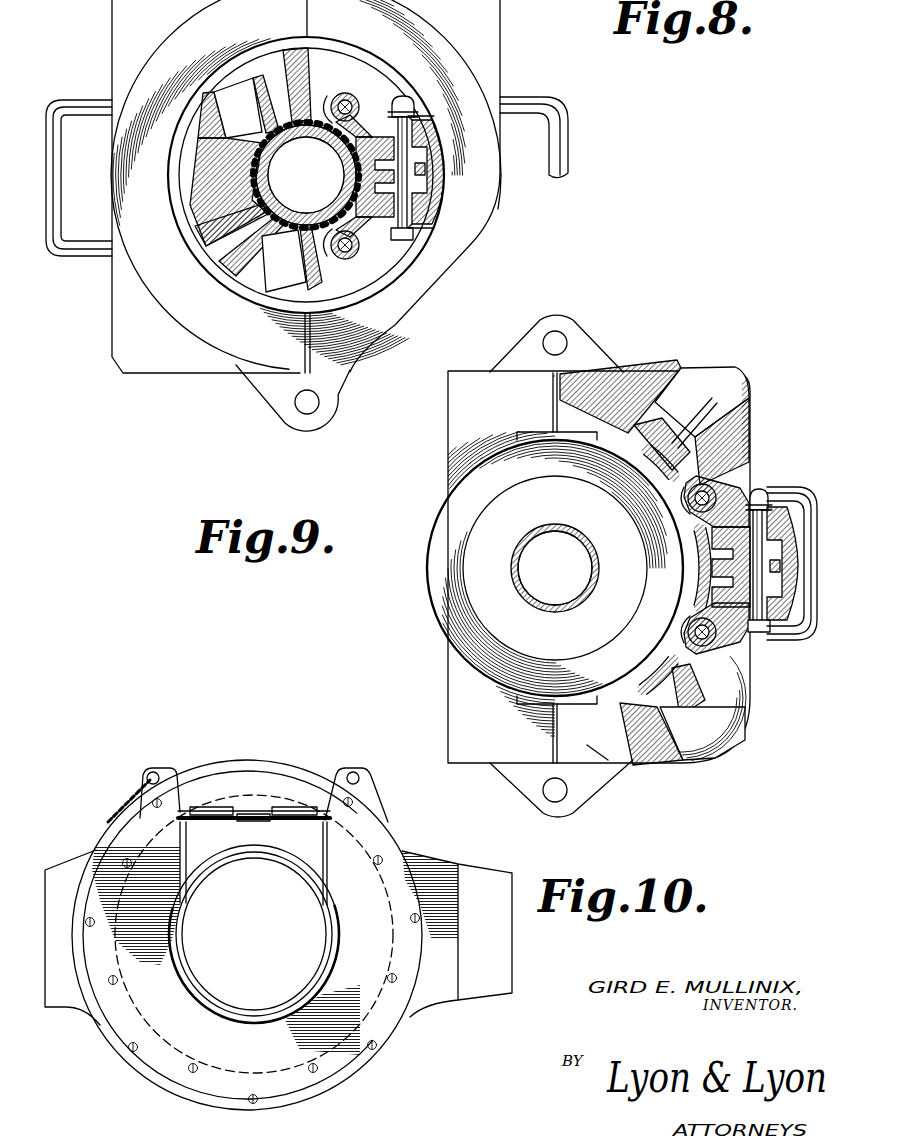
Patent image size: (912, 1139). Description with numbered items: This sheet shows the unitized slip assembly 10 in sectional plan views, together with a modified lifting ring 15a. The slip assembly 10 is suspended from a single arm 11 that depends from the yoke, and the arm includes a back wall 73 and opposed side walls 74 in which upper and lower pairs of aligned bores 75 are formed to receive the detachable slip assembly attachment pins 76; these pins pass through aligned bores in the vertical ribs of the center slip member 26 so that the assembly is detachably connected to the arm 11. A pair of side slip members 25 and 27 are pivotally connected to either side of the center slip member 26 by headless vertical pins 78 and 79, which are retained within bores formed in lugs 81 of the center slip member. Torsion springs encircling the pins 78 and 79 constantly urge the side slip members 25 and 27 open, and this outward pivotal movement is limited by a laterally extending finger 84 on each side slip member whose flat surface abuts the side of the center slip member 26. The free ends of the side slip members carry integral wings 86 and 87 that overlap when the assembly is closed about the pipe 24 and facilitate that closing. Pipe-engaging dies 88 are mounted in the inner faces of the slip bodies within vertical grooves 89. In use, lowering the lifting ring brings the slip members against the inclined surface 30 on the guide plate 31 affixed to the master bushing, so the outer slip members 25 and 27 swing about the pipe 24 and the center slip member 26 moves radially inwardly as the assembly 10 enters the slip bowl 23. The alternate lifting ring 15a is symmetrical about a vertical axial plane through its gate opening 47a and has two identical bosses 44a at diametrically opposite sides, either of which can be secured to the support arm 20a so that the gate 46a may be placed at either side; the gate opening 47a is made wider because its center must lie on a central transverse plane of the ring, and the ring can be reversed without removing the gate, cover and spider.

In FIG. 8, the unitized slip assembly 10 is at (243, 268).
In FIG. 9, the unitized slip assembly 10 is at (683, 357).
In FIG. 8, the arm 11 is at (446, 190).
In FIG. 9, the arm 11 is at (793, 585).
In FIG. 9, the slip bowl 23 is at (462, 515).
In FIG. 8, the pipe 24 is at (272, 161).
In FIG. 9, the pipe 24 is at (514, 572).
In FIG. 8, the side slip member 25 is at (258, 248).
In FIG. 9, the side slip member 25 is at (688, 752).
In FIG. 8, the center slip member 26 is at (373, 238).
In FIG. 9, the center slip member 26 is at (790, 618).
In FIG. 8, the side slip member 27 is at (262, 93).
In FIG. 9, the side slip member 27 is at (695, 385).
In FIG. 8, the inclined surface 30 is at (460, 81).
In FIG. 9, the inclined surface 30 is at (462, 702).
In FIG. 8, the guide plate 31 is at (462, 51).
In FIG. 9, the guide plate 31 is at (460, 738).
In FIG. 10, the bosses 44a is at (67, 998).
In FIG. 10, the gate 46a is at (237, 770).
In FIG. 10, the gate opening 47a is at (316, 790).
In FIG. 10, the lifting ring 15a is at (367, 1070).
In FIG. 10, the support arm 20a is at (483, 880).
In FIG. 8, the back wall 73 is at (434, 168).
In FIG. 9, the back wall 73 is at (790, 557).
In FIG. 8, the side walls 74 is at (424, 143).
In FIG. 9, the side walls 74 is at (742, 595).
In FIG. 8, the aligned bores 75 is at (418, 130).
In FIG. 8, the slip assembly attachment pins 76 is at (420, 229).
In FIG. 9, the slip assembly attachment pins 76 is at (812, 512).
In FIG. 8, the vertical pin 78 is at (343, 260).
In FIG. 9, the vertical pin 78 is at (700, 632).
In FIG. 8, the vertical pin 79 is at (345, 100).
In FIG. 9, the vertical pin 79 is at (700, 500).
In FIG. 8, the lugs 81 is at (352, 266).
In FIG. 9, the lugs 81 is at (733, 487).
In FIG. 8, the finger 84 is at (402, 93).
In FIG. 9, the finger 84 is at (712, 487).
In FIG. 8, the wing 86 is at (197, 143).
In FIG. 9, the wing 86 is at (588, 748).
In FIG. 8, the wing 87 is at (198, 215).
In FIG. 9, the wing 87 is at (590, 378).
In FIG. 8, the dies 88 is at (313, 223).
In FIG. 9, the dies 88 is at (668, 458).
In FIG. 8, the vertical grooves 89 is at (305, 122).
In FIG. 9, the vertical grooves 89 is at (685, 465).